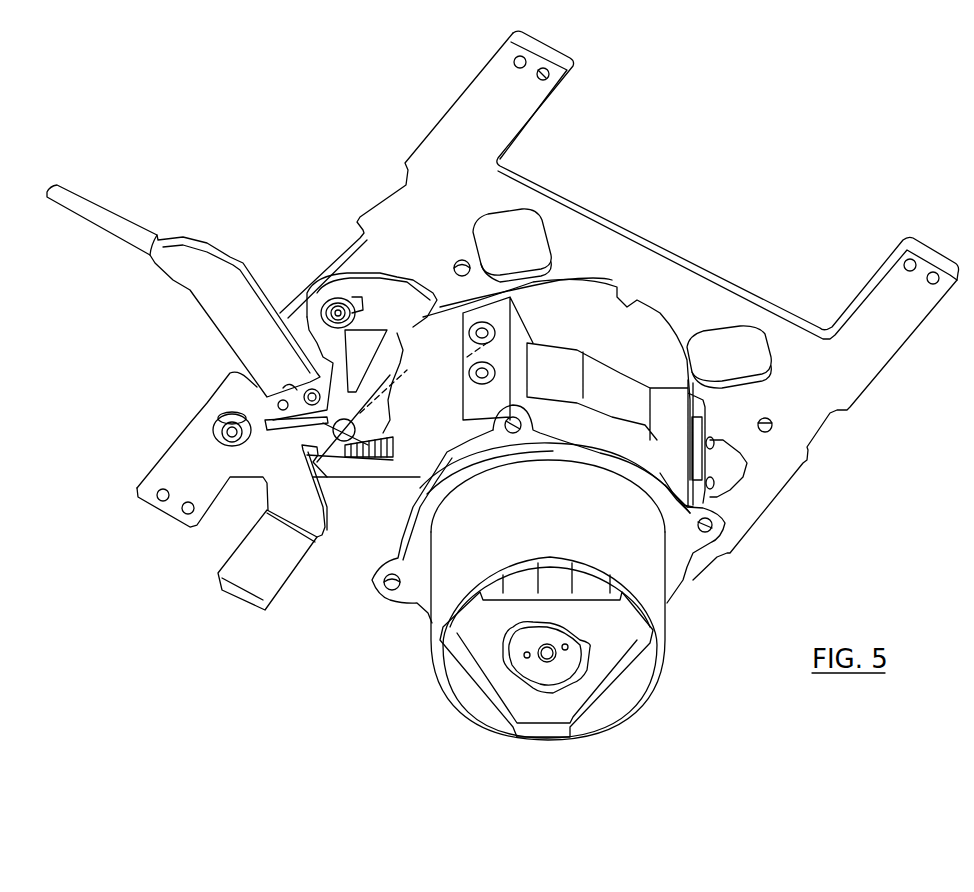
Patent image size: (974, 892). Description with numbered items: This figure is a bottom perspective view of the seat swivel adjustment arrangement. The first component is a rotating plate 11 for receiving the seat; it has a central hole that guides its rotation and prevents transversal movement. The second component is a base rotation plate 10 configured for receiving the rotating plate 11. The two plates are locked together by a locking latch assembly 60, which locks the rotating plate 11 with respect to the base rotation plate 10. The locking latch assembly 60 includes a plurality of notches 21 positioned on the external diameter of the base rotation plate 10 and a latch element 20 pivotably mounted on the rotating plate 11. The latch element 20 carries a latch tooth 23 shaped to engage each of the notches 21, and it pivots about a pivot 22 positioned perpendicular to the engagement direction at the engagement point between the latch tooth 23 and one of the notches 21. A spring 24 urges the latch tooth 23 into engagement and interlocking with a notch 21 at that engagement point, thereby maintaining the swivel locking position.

The base rotation plate 10 is at (652, 335).
The rotating plate 11 is at (432, 153).
The latch element 20 is at (382, 310).
The notches 21 is at (623, 303).
The pivot 22 is at (347, 442).
The latch tooth 23 is at (428, 320).
The spring 24 is at (389, 458).
The locking latch assembly 60 is at (297, 260).